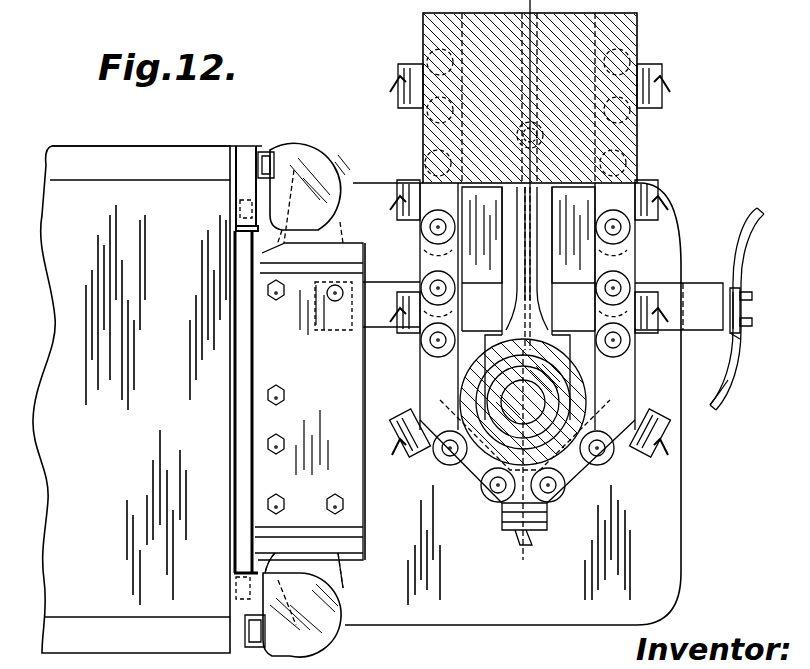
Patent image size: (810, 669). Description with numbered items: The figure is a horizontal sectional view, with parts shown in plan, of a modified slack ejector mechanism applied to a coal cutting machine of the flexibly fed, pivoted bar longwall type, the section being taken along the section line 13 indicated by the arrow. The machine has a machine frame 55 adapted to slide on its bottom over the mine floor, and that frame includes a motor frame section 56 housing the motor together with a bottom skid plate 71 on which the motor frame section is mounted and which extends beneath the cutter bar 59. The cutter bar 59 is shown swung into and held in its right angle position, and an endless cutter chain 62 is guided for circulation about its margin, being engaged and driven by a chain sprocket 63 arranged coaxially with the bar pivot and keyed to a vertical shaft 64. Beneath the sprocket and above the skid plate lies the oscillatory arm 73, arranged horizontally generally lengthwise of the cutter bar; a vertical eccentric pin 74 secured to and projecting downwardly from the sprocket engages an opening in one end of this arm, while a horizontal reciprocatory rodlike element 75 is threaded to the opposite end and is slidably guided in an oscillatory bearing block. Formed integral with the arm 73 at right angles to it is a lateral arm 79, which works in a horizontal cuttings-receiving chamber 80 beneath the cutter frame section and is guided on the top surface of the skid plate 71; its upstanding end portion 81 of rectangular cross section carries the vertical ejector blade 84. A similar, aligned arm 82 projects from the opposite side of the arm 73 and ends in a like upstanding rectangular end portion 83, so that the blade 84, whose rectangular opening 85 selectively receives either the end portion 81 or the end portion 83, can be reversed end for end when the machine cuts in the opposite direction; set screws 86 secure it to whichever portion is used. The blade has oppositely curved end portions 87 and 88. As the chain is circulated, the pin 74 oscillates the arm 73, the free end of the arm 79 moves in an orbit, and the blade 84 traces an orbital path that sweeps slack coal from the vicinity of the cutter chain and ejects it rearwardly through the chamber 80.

The arrow indicating direction of view 13 is at (514, 561).
The machine frame 55 is at (62, 318).
The motor frame section 56 is at (196, 180).
The cutter bar 59 is at (580, 46).
The endless cutter chain 62 is at (661, 99).
The chain sprocket 63 is at (466, 358).
The vertical shaft 64 is at (517, 418).
The bottom skid plate 71 is at (674, 512).
The oscillatory arm 73 is at (575, 260).
The eccentric pin 74 is at (545, 373).
The reciprocatory rodlike element 75 is at (484, 15).
The lateral arm 79 is at (690, 283).
The cuttings-receiving chamber 80 is at (398, 557).
The upstanding end portion 81 is at (736, 312).
The arm 82 is at (378, 290).
The upstanding rectangular end portion 83 is at (322, 297).
The ejector blade 84 is at (745, 246).
The rectangular opening 85 is at (737, 338).
The set screws 86 is at (753, 321).
The curved end portion 87 is at (757, 208).
The curved end portion 88 is at (723, 400).